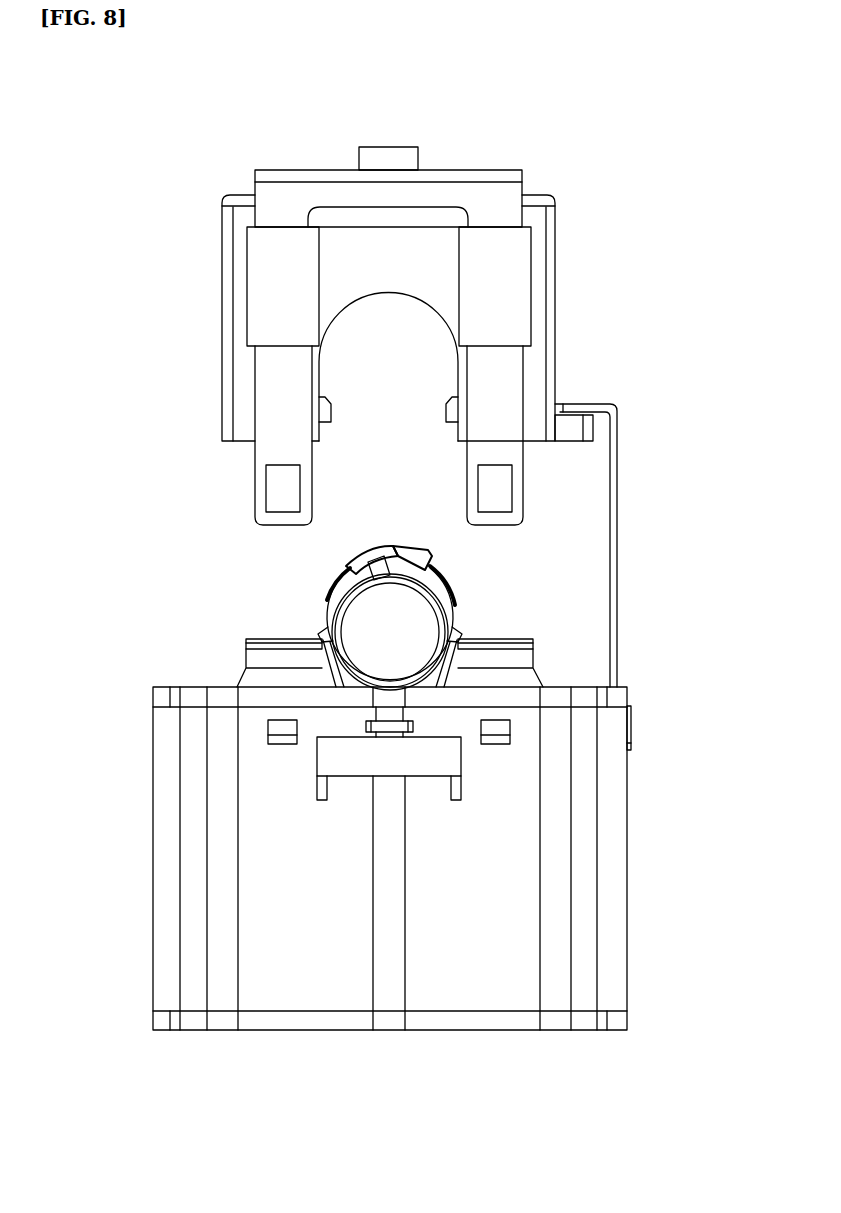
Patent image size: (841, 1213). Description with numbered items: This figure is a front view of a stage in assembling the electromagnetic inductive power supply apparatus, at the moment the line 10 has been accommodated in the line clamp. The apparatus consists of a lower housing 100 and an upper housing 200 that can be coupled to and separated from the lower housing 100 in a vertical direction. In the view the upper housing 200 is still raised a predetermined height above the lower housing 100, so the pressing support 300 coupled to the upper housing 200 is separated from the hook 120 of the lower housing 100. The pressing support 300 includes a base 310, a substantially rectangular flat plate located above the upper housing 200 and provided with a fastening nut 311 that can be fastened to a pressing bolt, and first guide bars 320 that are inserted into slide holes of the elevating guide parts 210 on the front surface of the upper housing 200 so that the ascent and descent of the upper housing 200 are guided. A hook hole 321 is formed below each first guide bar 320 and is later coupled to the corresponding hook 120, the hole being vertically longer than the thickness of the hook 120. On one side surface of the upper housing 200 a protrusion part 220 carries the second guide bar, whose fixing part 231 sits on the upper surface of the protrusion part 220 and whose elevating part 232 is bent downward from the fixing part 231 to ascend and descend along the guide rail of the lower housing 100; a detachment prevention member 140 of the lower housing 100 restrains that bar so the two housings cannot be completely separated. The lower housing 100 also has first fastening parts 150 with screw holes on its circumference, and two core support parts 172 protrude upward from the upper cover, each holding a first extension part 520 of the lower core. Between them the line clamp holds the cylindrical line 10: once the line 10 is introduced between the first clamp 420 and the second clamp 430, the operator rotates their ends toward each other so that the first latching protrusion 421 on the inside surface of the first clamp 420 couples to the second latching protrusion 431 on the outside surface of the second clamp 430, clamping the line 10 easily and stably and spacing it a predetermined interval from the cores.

The pressing support 300 is at (240, 168).
The base 310 is at (288, 170).
The fastening nut 311 is at (366, 147).
The upper housing 200 is at (560, 320).
The elevating guide part 210 is at (514, 272).
The protrusion part 220 is at (573, 426).
The fixing part 231 is at (583, 404).
The elevating part 232 is at (620, 414).
The first guide bar 320 is at (278, 384).
The hook hole 321 is at (280, 487).
The line 10 is at (368, 615).
The first clamp 420 is at (348, 582).
The first latching protrusion 421 is at (372, 566).
The second clamp 430 is at (436, 593).
The second latching protrusion 431 is at (413, 551).
The first extension part 520 is at (262, 640).
The core support part 172 is at (260, 659).
The lower housing 100 is at (289, 920).
The hook 120 is at (285, 731).
The detachment prevention member 140 is at (631, 730).
The first fastening part 150 is at (388, 940).